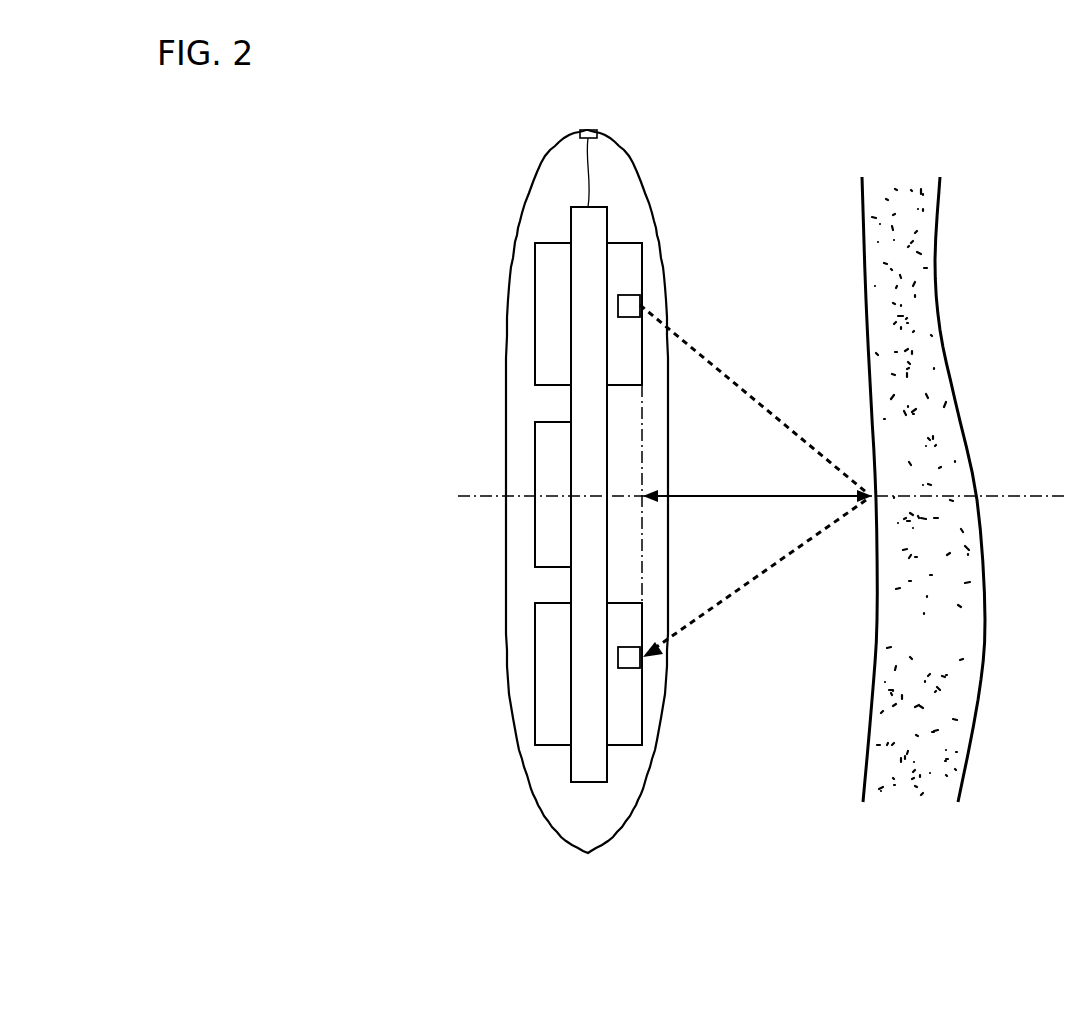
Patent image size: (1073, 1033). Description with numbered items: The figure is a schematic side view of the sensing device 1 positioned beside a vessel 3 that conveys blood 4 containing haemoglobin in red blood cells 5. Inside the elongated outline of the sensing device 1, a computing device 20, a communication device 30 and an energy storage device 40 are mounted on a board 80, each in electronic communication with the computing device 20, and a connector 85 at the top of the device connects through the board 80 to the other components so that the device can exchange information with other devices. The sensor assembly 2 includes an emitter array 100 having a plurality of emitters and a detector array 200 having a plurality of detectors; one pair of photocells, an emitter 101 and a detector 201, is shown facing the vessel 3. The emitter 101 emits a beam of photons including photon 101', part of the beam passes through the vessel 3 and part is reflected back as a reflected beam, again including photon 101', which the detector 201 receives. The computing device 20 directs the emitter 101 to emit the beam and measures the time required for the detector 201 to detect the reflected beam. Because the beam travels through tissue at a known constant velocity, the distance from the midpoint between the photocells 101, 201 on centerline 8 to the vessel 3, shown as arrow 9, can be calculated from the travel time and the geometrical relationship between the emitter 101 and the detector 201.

The sensing device 1 is at (496, 226).
The sensor assembly 2 is at (650, 600).
The vessel 3 is at (938, 211).
The blood 4 is at (920, 274).
The red blood cells 5 is at (917, 335).
The centerline 8 is at (642, 417).
The arrow 9 is at (730, 495).
The computing device 20 is at (553, 668).
The communication device 30 is at (553, 447).
The energy storage device 40 is at (553, 290).
The board 80 is at (581, 765).
The connector 85 is at (590, 130).
The emitter array 100 is at (617, 243).
The emitter 101 is at (673, 277).
The photon 101' is at (753, 481).
The detector array 200 is at (642, 730).
The detector 201 is at (625, 655).